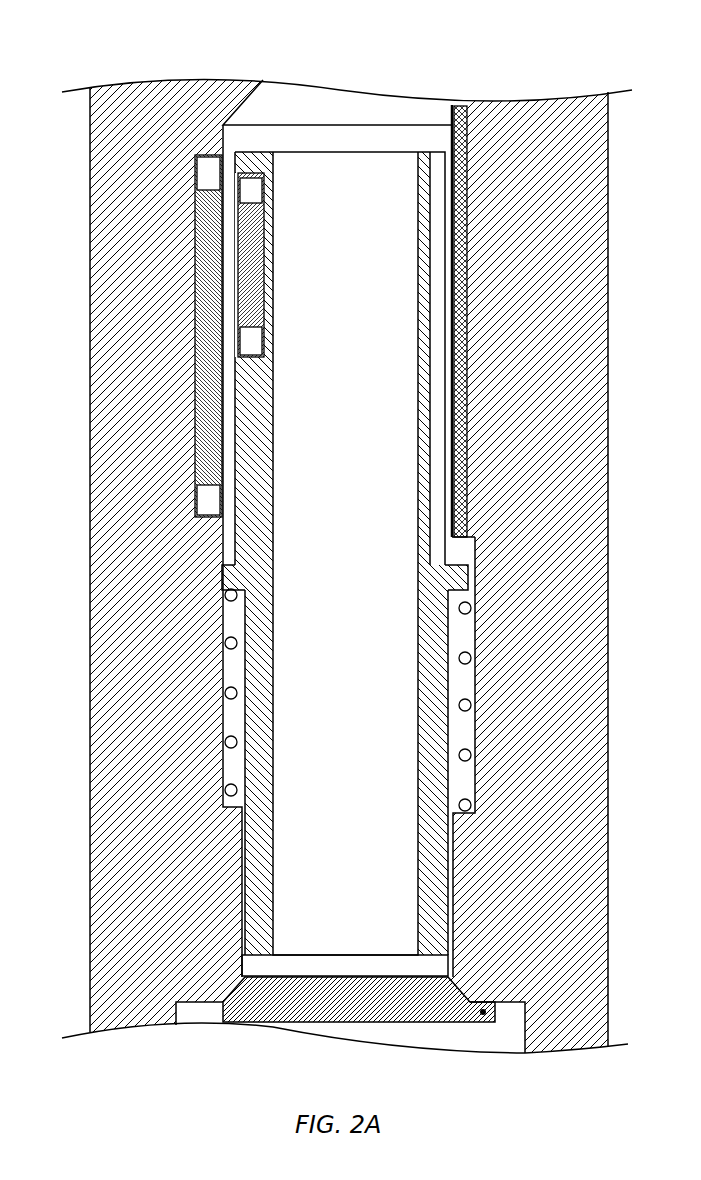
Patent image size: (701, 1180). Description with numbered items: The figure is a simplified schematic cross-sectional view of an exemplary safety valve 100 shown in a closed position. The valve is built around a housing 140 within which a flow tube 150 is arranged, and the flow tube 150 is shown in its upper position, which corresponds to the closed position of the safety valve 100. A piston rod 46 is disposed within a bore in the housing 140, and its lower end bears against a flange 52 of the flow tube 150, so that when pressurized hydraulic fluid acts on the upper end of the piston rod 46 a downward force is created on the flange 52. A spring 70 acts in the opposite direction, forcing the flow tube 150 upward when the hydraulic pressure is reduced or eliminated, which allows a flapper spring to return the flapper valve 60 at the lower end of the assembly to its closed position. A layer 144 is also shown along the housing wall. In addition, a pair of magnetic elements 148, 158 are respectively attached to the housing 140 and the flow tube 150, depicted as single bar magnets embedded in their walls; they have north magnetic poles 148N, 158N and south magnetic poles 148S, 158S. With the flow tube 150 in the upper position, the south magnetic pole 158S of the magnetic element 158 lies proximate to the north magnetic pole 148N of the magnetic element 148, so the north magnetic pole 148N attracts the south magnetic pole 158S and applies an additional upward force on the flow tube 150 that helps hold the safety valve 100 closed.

The safety valve 100 is at (305, 46).
The housing 140 is at (557, 799).
The liner 144 is at (463, 92).
The piston rod 46 is at (457, 345).
The magnetic element 148 is at (213, 303).
The north magnetic pole 148N is at (198, 173).
The south magnetic pole 148S is at (200, 498).
The flow tube 150 is at (428, 637).
The magnetic element 158 is at (248, 253).
The south magnetic pole 158S is at (264, 194).
The north magnetic pole 158N is at (262, 337).
The flange 52 is at (460, 577).
The spring 70 is at (472, 613).
The flapper valve 60 is at (481, 1013).